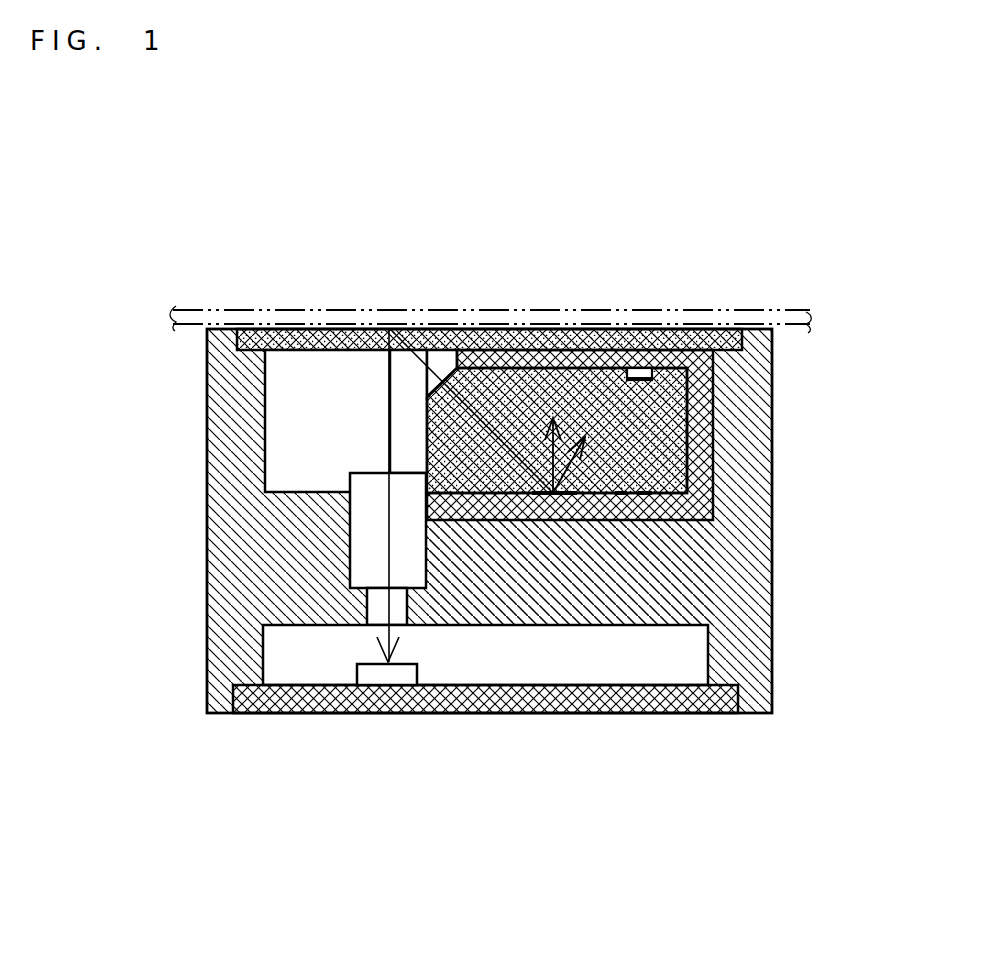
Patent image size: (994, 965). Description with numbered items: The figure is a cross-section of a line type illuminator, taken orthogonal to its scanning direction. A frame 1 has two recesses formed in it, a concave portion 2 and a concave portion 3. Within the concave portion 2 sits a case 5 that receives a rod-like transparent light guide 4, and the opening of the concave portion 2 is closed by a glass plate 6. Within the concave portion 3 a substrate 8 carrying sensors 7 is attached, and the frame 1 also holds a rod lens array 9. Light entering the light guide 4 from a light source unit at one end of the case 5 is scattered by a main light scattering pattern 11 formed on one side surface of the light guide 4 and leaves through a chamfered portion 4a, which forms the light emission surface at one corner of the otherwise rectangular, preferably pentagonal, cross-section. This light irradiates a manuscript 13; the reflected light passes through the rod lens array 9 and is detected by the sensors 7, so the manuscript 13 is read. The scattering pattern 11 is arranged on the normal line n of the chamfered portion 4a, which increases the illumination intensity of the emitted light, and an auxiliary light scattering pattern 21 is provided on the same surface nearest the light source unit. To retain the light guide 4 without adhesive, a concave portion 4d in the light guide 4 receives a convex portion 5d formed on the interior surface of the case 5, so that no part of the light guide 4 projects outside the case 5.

The frame 1 is at (222, 600).
The concave portion 2 is at (275, 416).
The concave portion 3 is at (708, 658).
The rod-like transparent light guide 4 is at (663, 443).
The chamfered portion 4a is at (442, 382).
The concave portion 4d is at (648, 370).
The case 5 is at (695, 401).
The convex portion 5d is at (641, 377).
The glass plate 6 is at (526, 347).
The sensors 7 is at (387, 678).
The substrate 8 is at (277, 700).
The rod lens array 9 is at (368, 532).
The main light scattering pattern 11 is at (607, 558).
The manuscript 13 is at (295, 322).
The auxiliary light scattering pattern 21 is at (640, 497).
The normal line n is at (430, 367).